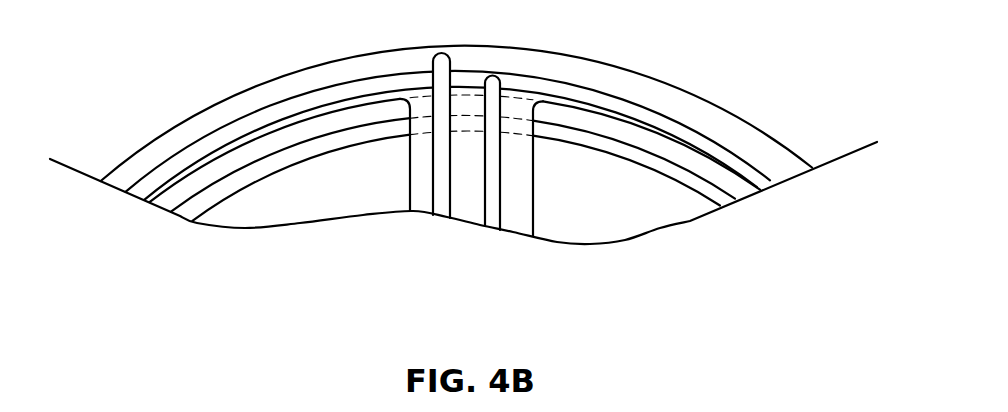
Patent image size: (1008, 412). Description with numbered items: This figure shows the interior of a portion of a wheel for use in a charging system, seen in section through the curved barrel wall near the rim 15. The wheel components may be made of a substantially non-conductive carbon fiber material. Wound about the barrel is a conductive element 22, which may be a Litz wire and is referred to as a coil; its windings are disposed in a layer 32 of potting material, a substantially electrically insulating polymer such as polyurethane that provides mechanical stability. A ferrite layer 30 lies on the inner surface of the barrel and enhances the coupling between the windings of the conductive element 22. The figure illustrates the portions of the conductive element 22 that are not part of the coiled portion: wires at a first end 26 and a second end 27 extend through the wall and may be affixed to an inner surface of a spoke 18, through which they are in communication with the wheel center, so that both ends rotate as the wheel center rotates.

The layer of potting material 32 is at (299, 85).
The conductive element 22 is at (397, 85).
The rim 15 is at (692, 154).
The ferrite layer 30 is at (632, 147).
The spoke 18 is at (533, 207).
The first end 26 is at (442, 193).
The second end 27 is at (492, 193).